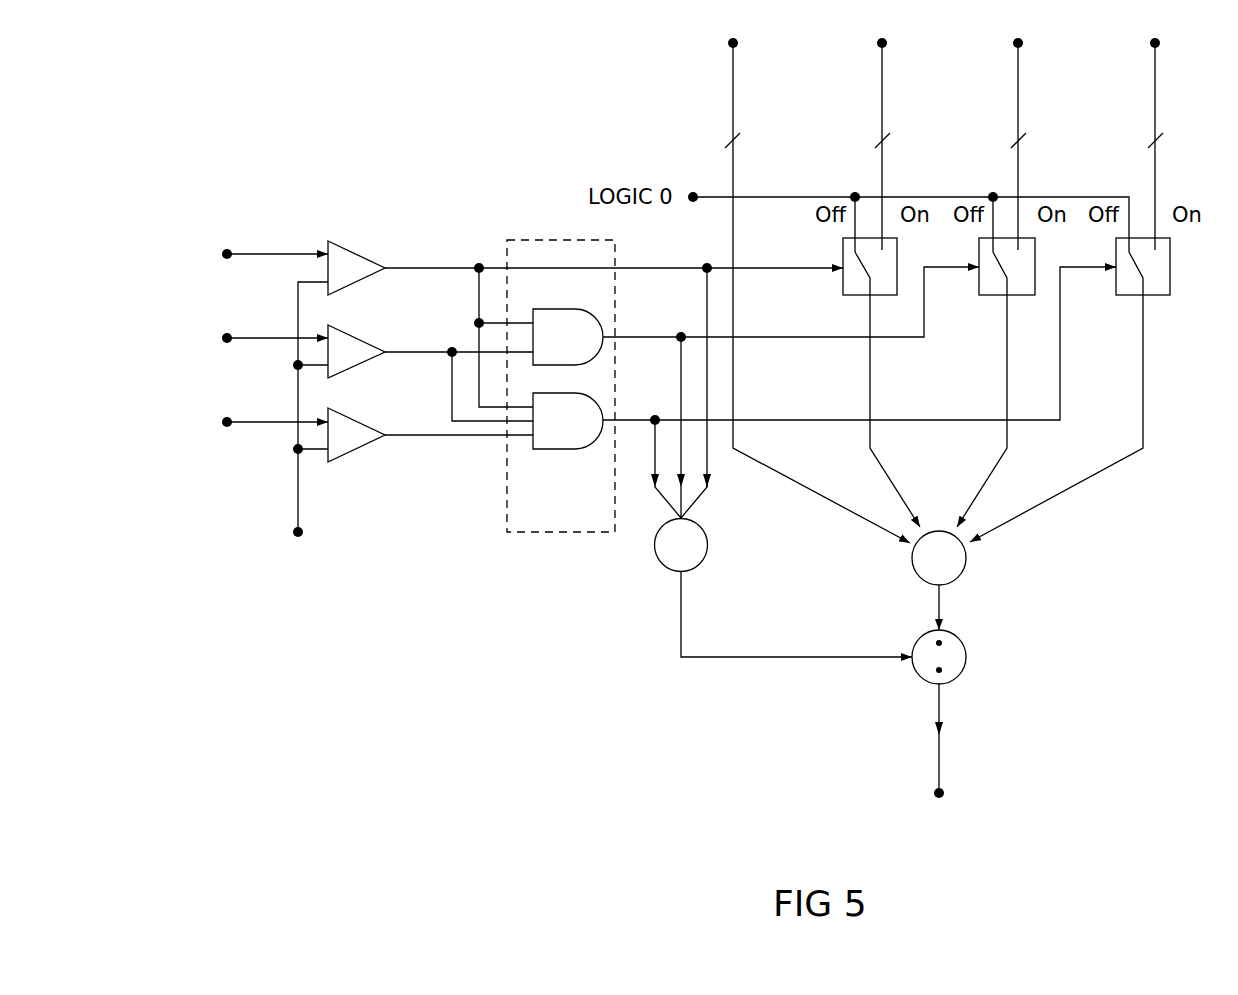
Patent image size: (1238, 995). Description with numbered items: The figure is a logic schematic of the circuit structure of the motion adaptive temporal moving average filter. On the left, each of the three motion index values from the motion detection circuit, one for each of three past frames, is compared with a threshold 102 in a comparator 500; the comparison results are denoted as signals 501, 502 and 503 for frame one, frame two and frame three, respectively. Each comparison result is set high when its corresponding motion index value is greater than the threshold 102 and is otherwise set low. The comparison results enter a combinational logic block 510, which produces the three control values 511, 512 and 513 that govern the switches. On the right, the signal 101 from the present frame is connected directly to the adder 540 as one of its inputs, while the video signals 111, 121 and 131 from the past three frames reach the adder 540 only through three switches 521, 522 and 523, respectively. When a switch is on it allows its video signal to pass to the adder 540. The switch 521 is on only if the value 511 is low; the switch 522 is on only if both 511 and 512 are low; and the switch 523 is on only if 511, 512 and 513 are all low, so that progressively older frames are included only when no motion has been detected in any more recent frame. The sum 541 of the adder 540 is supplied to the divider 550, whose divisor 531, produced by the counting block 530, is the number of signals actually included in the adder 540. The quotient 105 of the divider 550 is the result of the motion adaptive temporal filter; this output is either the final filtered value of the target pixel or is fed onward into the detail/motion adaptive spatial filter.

The threshold 102 is at (285, 409).
The comparator 500 is at (356, 342).
The comparison result 501 is at (459, 321).
The comparison result 502 is at (459, 370).
The comparison result 503 is at (459, 418).
The combinational logic 510 is at (561, 386).
The motion index value 511 is at (661, 375).
The motion index value 512 is at (791, 392).
The motion index value 513 is at (859, 392).
The switch 521 is at (895, 382).
The switch 522 is at (1020, 382).
The switch 523 is at (1096, 390).
The divisor counter 530 is at (709, 545).
The divisor 531 is at (796, 630).
The adder 540 is at (966, 558).
The sum 541 is at (966, 607).
The divider 550 is at (966, 657).
The signal from present frame 101 is at (796, 289).
The video signal 111 is at (860, 143).
The video signal 121 is at (996, 143).
The video signal 131 is at (1133, 143).
The quotient 105 is at (964, 741).